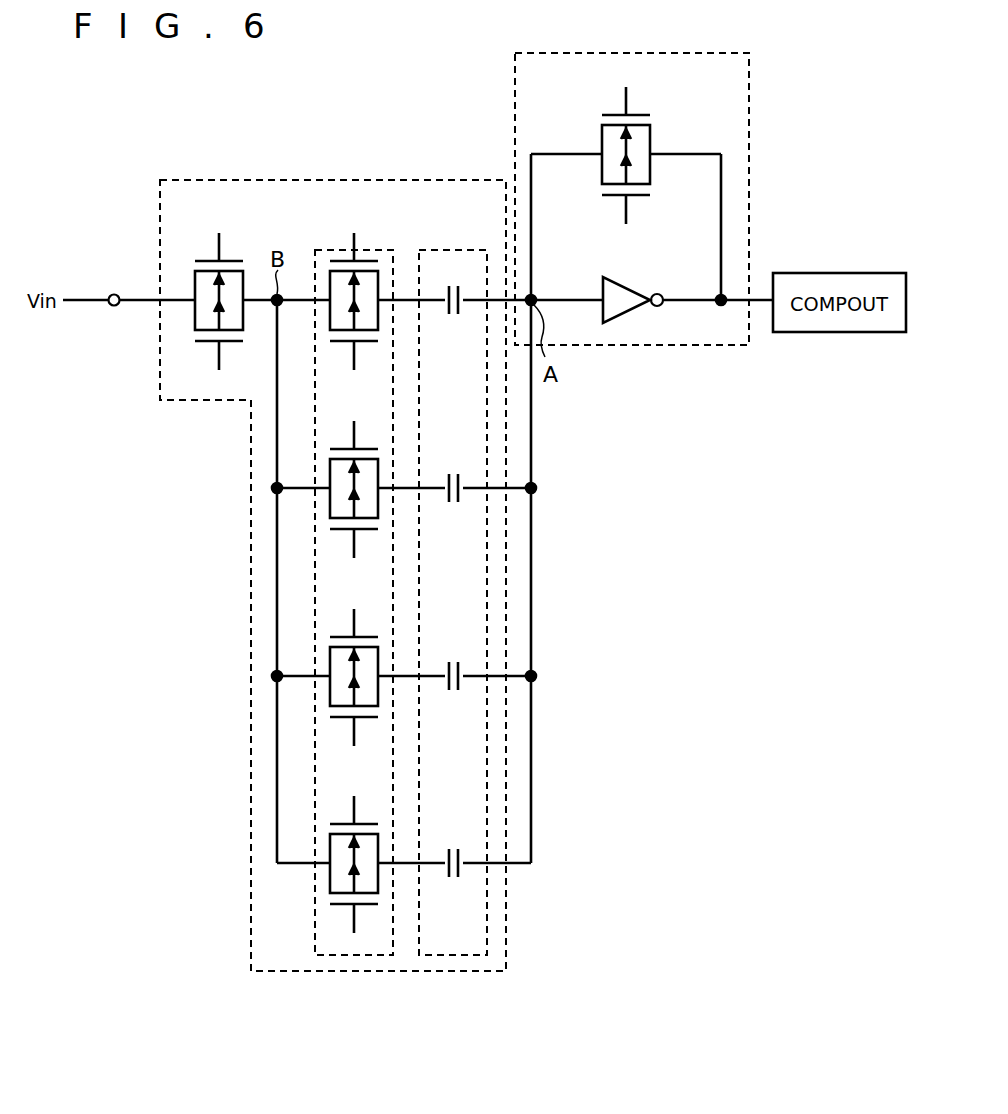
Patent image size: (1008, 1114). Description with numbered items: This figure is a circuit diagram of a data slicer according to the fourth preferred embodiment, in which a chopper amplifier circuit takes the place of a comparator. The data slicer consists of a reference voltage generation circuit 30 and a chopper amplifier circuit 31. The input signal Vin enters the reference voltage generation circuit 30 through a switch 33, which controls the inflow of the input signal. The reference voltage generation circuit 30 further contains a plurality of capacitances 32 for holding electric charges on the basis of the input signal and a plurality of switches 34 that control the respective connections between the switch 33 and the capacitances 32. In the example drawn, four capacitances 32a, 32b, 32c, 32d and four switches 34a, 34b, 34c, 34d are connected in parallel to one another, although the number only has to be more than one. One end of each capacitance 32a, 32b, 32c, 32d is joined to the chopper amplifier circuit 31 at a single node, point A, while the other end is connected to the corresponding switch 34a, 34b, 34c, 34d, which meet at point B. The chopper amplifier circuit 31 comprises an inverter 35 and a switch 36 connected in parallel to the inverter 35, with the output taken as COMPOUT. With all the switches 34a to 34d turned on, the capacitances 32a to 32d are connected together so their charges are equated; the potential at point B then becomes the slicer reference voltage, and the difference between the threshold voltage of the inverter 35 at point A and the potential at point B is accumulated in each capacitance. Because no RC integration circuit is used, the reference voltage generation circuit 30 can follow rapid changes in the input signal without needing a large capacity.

The reference voltage generation circuit 30 is at (282, 974).
The chopper amplifier circuit 31 is at (720, 350).
The capacitances 32 is at (449, 958).
The capacitance 32a is at (454, 316).
The capacitance 32b is at (455, 504).
The capacitance 32c is at (454, 692).
The capacitance 32d is at (455, 879).
The switch 33 is at (197, 262).
The switches 34 is at (350, 958).
The switch 34a is at (330, 261).
The switch 34b is at (330, 449).
The switch 34c is at (330, 637).
The switch 34d is at (330, 824).
The inverter 35 is at (622, 325).
The switch 36 is at (602, 114).